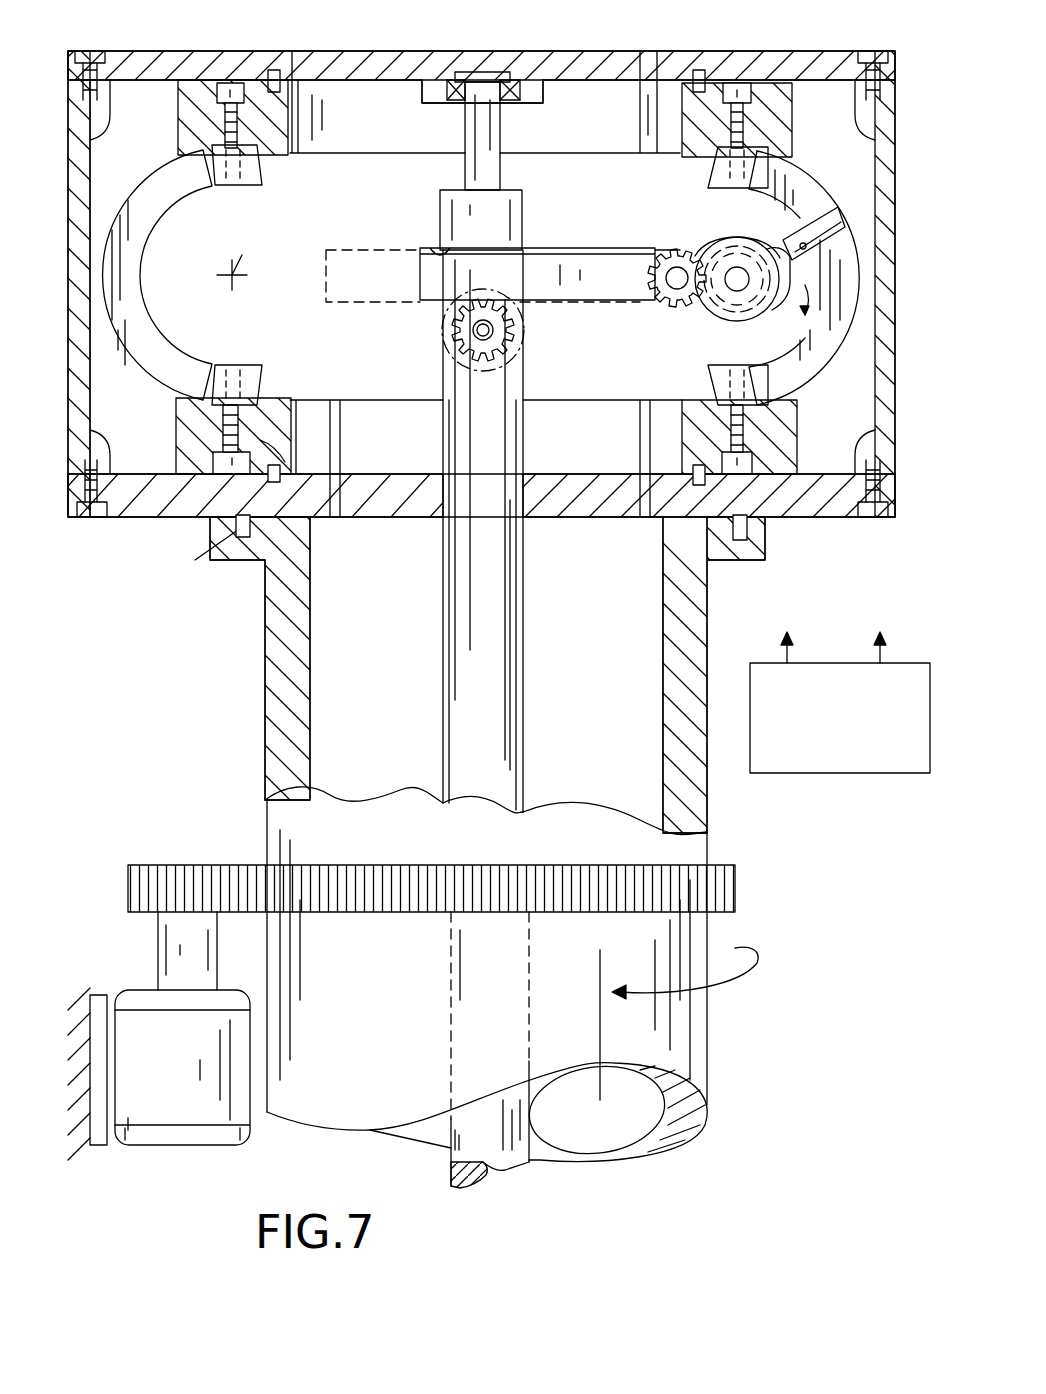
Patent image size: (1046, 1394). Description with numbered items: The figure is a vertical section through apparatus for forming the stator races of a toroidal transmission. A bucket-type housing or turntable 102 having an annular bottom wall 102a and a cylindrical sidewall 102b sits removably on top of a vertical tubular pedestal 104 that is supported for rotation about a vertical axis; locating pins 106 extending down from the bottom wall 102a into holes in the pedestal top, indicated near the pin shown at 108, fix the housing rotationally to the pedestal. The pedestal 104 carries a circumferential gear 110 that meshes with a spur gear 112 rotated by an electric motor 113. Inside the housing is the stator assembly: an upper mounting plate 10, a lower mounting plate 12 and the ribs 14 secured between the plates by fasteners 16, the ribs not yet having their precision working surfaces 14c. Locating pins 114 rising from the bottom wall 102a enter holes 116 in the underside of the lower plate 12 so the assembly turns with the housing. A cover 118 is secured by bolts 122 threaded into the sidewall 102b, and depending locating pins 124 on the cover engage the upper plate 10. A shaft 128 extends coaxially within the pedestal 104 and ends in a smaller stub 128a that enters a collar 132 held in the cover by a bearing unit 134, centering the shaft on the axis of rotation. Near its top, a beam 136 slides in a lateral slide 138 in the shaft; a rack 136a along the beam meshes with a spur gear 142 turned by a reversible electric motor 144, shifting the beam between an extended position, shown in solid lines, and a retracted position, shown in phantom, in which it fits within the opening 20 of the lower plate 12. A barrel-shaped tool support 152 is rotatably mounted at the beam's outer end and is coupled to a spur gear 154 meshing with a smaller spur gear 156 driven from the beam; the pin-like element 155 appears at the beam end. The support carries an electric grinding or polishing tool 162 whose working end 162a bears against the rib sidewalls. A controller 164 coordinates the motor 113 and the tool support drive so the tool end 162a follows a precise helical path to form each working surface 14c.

The upper mounting plate 10 is at (178, 105).
The lower mounting plate 12 is at (178, 436).
The ribs 14 is at (152, 192).
The precision working surfaces 14c is at (790, 190).
The fasteners 16 is at (750, 140).
The opening 20 is at (685, 436).
The housing 102 is at (833, 520).
The annular bottom wall 102a is at (138, 520).
The cylindrical sidewall 102b is at (80, 172).
The tubular pedestal 104 is at (265, 680).
The locating pins 106 is at (247, 540).
The pin 108 is at (240, 530).
The circumferential gear 110 is at (405, 872).
The spur gear 112 is at (178, 866).
The electric motor 113 is at (159, 1036).
The locating pins 114 is at (282, 476).
The holes 116 is at (288, 462).
The cover 118 is at (215, 55).
The bolts 122 is at (95, 48).
The locating pins 124 is at (290, 66).
The shaft 128 is at (452, 666).
The stub 128a is at (468, 118).
The collar 132 is at (507, 78).
The bearing unit 134 is at (452, 80).
The beam 136 is at (420, 255).
The rack 136a is at (546, 305).
The lateral slide 138 is at (425, 250).
The spur gear 142 is at (455, 330).
The reversible electric motor 144 is at (445, 356).
The tool support 152 is at (722, 250).
The spur gear 154 is at (718, 260).
The pin 155 is at (658, 252).
The smaller spur gear 156 is at (668, 306).
The grinding or polishing tool 162 is at (780, 244).
The working end 162a is at (830, 230).
The controller 164 is at (890, 775).